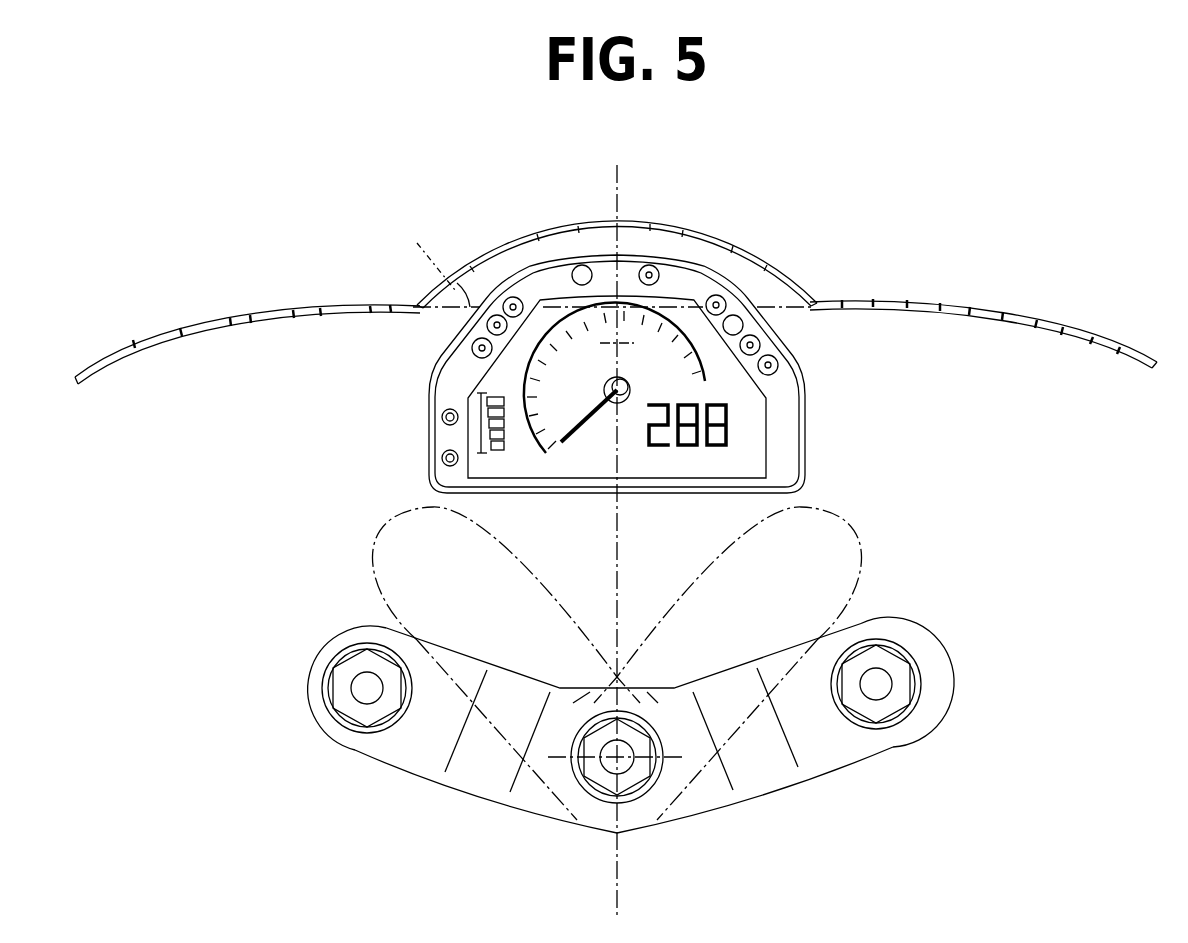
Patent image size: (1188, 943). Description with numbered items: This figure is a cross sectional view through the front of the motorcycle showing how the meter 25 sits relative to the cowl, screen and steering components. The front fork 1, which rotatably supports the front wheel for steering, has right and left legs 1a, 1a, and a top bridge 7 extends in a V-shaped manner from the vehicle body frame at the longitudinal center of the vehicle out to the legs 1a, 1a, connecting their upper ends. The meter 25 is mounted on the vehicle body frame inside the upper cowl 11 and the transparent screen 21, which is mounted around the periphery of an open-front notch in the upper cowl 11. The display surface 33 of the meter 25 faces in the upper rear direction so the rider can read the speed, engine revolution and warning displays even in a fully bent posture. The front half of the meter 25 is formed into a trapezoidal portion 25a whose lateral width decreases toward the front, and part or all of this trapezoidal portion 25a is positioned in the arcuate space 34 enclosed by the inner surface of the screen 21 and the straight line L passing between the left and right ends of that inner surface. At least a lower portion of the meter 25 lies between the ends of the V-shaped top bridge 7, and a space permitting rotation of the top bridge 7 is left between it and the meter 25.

The front fork 1 is at (637, 714).
The legs of the front fork 1a is at (367, 677).
The top bridge 7 is at (407, 515).
The upper cowl 11 is at (253, 310).
The screen 21 is at (580, 227).
The meter 25 is at (619, 322).
The trapezoidal portion 25a is at (447, 352).
The display surface 33 is at (677, 273).
The arcuate space 34 is at (733, 263).
The straight line L is at (438, 248).